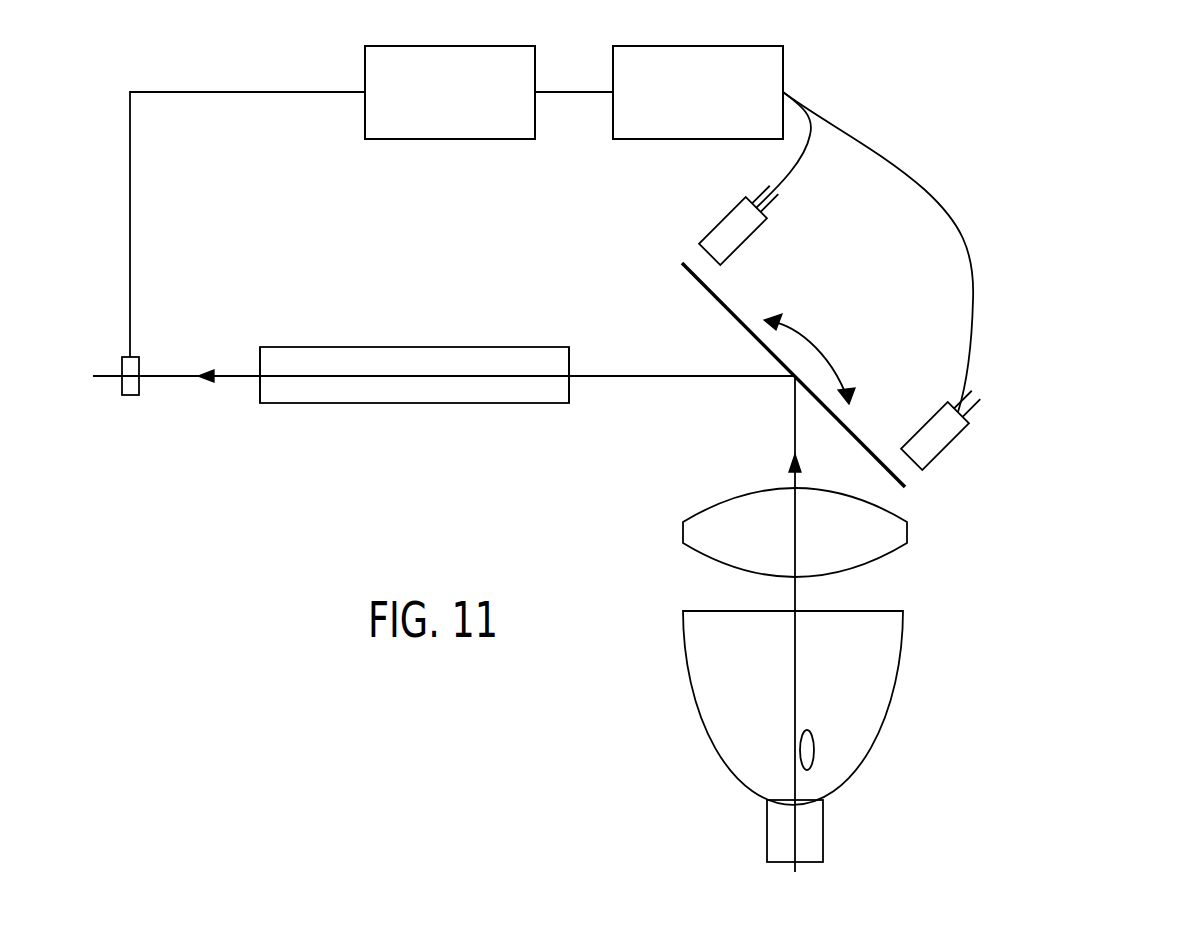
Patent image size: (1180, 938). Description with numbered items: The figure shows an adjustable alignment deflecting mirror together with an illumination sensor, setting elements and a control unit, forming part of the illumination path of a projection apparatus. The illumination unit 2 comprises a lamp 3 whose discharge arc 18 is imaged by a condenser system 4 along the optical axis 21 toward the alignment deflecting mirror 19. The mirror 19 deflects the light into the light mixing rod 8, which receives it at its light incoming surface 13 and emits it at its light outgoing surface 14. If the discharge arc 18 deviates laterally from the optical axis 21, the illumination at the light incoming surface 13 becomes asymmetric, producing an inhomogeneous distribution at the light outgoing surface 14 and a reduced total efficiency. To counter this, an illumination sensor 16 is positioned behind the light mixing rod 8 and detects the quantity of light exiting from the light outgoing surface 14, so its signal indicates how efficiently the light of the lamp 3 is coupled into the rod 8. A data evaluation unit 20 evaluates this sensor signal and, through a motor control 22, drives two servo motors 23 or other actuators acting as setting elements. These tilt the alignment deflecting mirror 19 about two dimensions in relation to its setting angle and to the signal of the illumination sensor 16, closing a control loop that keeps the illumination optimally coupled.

The illumination unit 2 is at (1083, 612).
The lamp 3 is at (890, 718).
The condenser system 4 is at (907, 533).
The light mixing rod 8 is at (400, 347).
The light incoming surface 13 is at (569, 357).
The light outgoing surface 14 is at (260, 355).
The illumination sensor 16 is at (122, 365).
The discharge arc 18 is at (814, 752).
The alignment deflecting mirror 19 is at (855, 435).
The data evaluation unit 20 is at (436, 107).
The optical axis 21 is at (418, 377).
The motor control 22 is at (685, 107).
The servo motors 23 is at (750, 240).